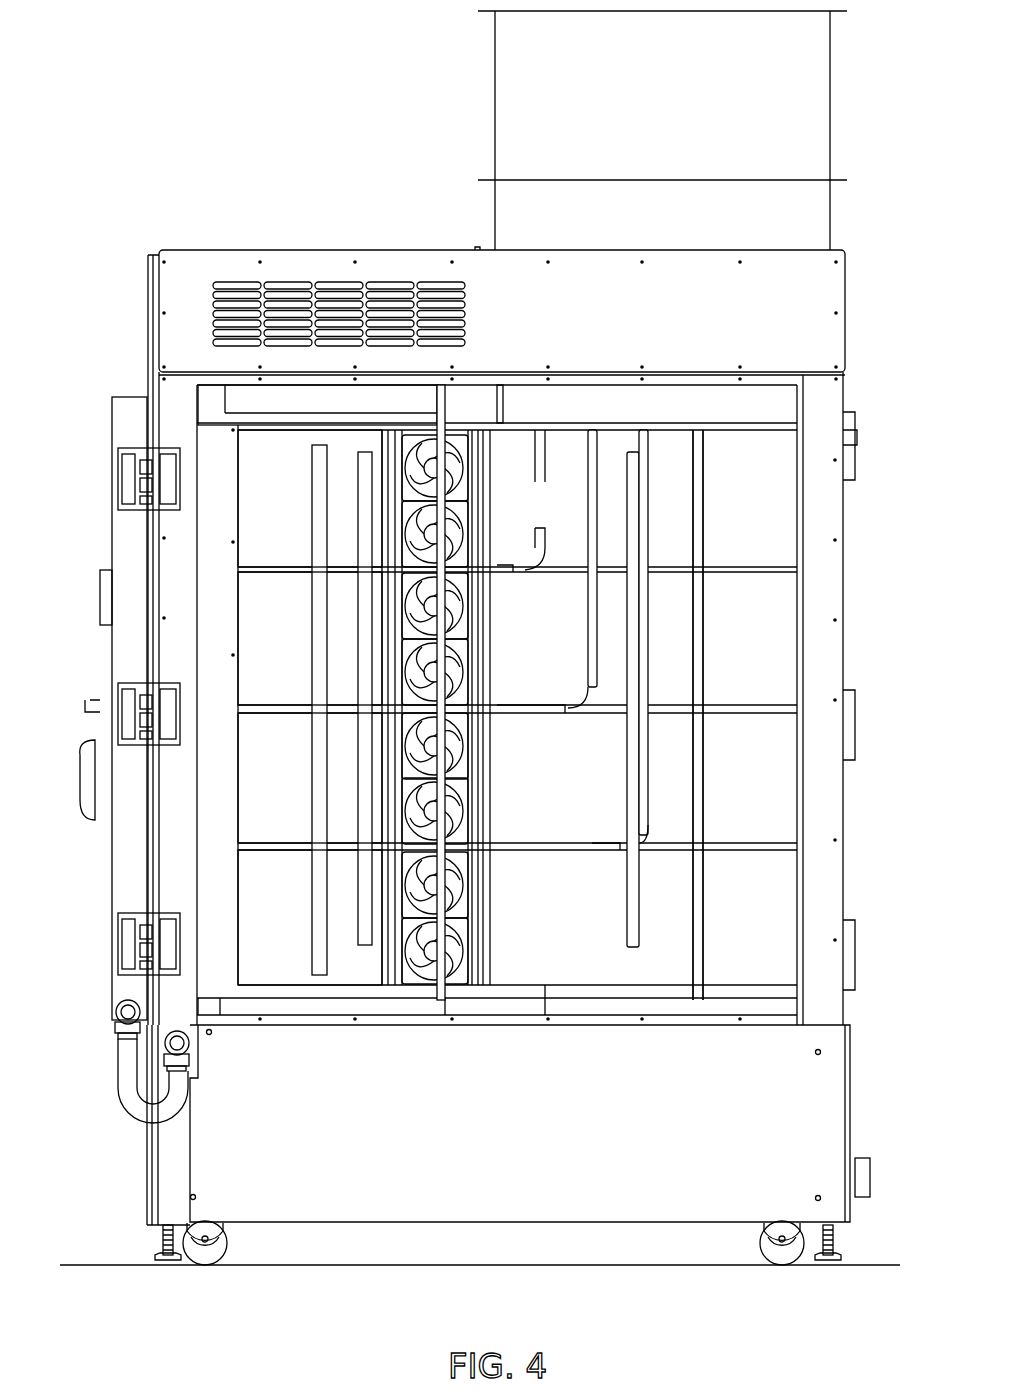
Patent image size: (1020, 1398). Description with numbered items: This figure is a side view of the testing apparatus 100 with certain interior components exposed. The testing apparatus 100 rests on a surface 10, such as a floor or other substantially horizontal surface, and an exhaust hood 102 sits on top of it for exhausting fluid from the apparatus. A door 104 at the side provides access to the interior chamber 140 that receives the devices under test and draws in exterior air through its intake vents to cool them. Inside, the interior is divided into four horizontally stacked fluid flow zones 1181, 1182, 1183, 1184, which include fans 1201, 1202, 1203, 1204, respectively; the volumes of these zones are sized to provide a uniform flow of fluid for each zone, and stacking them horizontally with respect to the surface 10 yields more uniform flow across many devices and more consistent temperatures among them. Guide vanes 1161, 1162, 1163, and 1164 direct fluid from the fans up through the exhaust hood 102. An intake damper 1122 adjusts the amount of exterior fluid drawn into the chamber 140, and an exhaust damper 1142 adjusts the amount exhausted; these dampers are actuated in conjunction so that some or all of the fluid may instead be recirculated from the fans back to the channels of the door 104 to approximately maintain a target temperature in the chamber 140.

The surface 10 is at (88, 1262).
The testing apparatus 100 is at (170, 160).
The exhaust hood 102 is at (830, 120).
The door 104 is at (120, 556).
The intake damper 1122 is at (217, 402).
The exhaust damper 1142 is at (440, 430).
The guide vane 1161 is at (545, 458).
The guide vane 1162 is at (595, 655).
The guide vane 1163 is at (648, 788).
The fourth flow tube 1164 is at (703, 950).
The fluid flow zone 1181 is at (298, 518).
The fluid flow zone 1182 is at (298, 651).
The fluid flow zone 1183 is at (298, 795).
The fluid flow zone 1184 is at (298, 935).
The fans 1201 is at (470, 437).
The fans 1202 is at (470, 578).
The fans 1203 is at (470, 716).
The fans 1204 is at (470, 855).
The chamber 140 is at (553, 958).